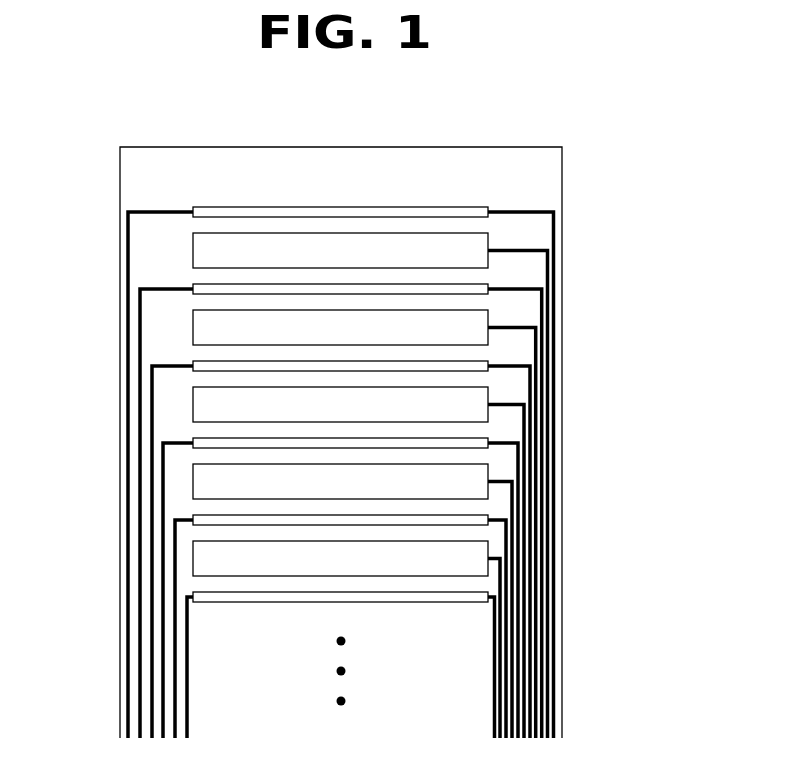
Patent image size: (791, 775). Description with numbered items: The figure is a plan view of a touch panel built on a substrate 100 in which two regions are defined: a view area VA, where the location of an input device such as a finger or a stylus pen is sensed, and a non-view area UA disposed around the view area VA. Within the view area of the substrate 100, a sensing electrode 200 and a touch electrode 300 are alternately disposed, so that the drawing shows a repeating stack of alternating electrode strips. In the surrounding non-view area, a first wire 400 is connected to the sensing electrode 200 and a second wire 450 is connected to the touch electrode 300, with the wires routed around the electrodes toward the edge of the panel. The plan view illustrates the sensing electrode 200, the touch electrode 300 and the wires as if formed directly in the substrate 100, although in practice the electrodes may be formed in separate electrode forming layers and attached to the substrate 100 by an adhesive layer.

The substrate 100 is at (498, 147).
The sensing electrode 200 is at (392, 250).
The touch electrode 300 is at (297, 212).
The first wire 400 is at (513, 249).
The second wire 450 is at (513, 211).
The view area VA is at (326, 346).
The non-view area UA is at (307, 409).